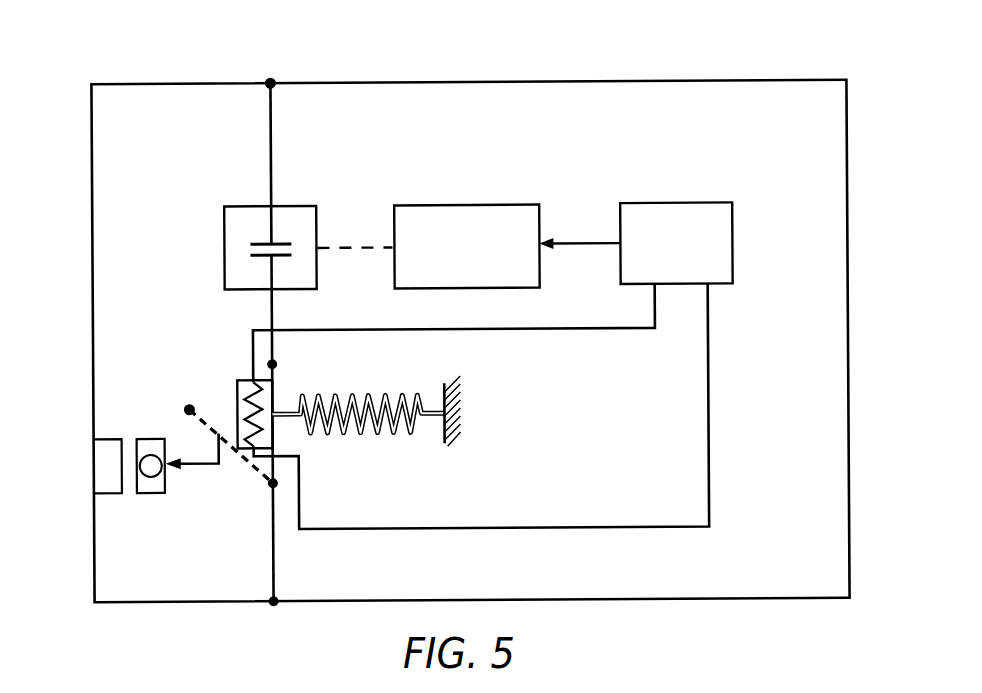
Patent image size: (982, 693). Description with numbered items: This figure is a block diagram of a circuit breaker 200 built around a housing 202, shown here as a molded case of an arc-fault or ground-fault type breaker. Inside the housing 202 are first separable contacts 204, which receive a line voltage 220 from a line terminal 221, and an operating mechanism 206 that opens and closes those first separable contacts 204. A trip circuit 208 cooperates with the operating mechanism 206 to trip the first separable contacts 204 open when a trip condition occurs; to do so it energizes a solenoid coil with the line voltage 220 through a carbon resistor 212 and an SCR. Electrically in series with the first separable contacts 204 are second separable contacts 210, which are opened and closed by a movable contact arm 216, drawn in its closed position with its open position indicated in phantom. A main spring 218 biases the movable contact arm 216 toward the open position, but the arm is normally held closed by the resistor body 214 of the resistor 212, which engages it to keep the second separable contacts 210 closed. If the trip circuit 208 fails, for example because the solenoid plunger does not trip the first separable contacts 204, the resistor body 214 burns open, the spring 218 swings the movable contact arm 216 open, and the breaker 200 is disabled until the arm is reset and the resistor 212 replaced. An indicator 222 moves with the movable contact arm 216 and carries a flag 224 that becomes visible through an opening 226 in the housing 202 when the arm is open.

The circuit breaker 200 is at (700, 632).
The housing 202 is at (757, 82).
The first separable contacts 204 is at (295, 205).
The operating mechanism 206 is at (485, 205).
The trip circuit 208 is at (690, 204).
The second separable contacts 210 is at (446, 407).
The carbon resistor 212 is at (274, 392).
The resistor body 214 is at (237, 407).
The movable contact arm 216 is at (275, 437).
The main spring 218 is at (392, 432).
The line voltage 220 is at (273, 135).
The line terminal 221 is at (268, 89).
The indicator 222 is at (197, 466).
The flag 224 is at (150, 491).
The opening 226 is at (103, 477).